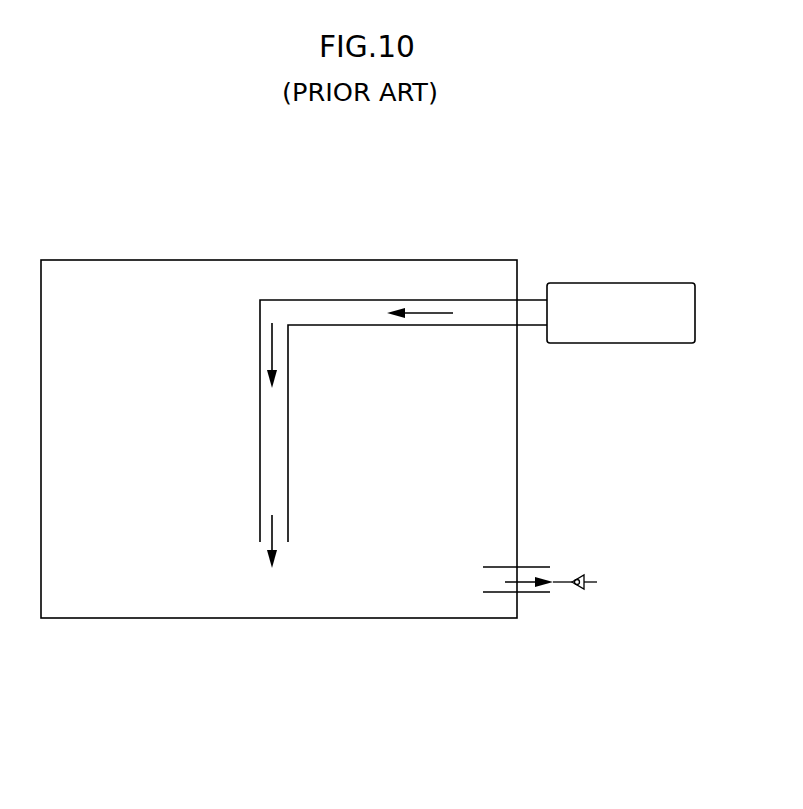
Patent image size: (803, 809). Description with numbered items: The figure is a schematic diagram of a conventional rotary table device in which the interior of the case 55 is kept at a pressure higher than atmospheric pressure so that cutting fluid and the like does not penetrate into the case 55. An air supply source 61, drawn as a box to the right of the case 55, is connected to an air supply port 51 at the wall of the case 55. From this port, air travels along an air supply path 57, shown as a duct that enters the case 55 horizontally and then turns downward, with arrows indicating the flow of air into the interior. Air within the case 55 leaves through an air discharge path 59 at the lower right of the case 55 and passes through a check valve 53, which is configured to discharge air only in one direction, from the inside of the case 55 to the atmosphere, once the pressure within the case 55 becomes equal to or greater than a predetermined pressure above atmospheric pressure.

The air supply port 51 is at (527, 298).
The check valve 53 is at (597, 582).
The case 55 is at (175, 617).
The air supply path 57 is at (288, 440).
The air discharge path 59 is at (525, 567).
The air supply source 61 is at (610, 282).